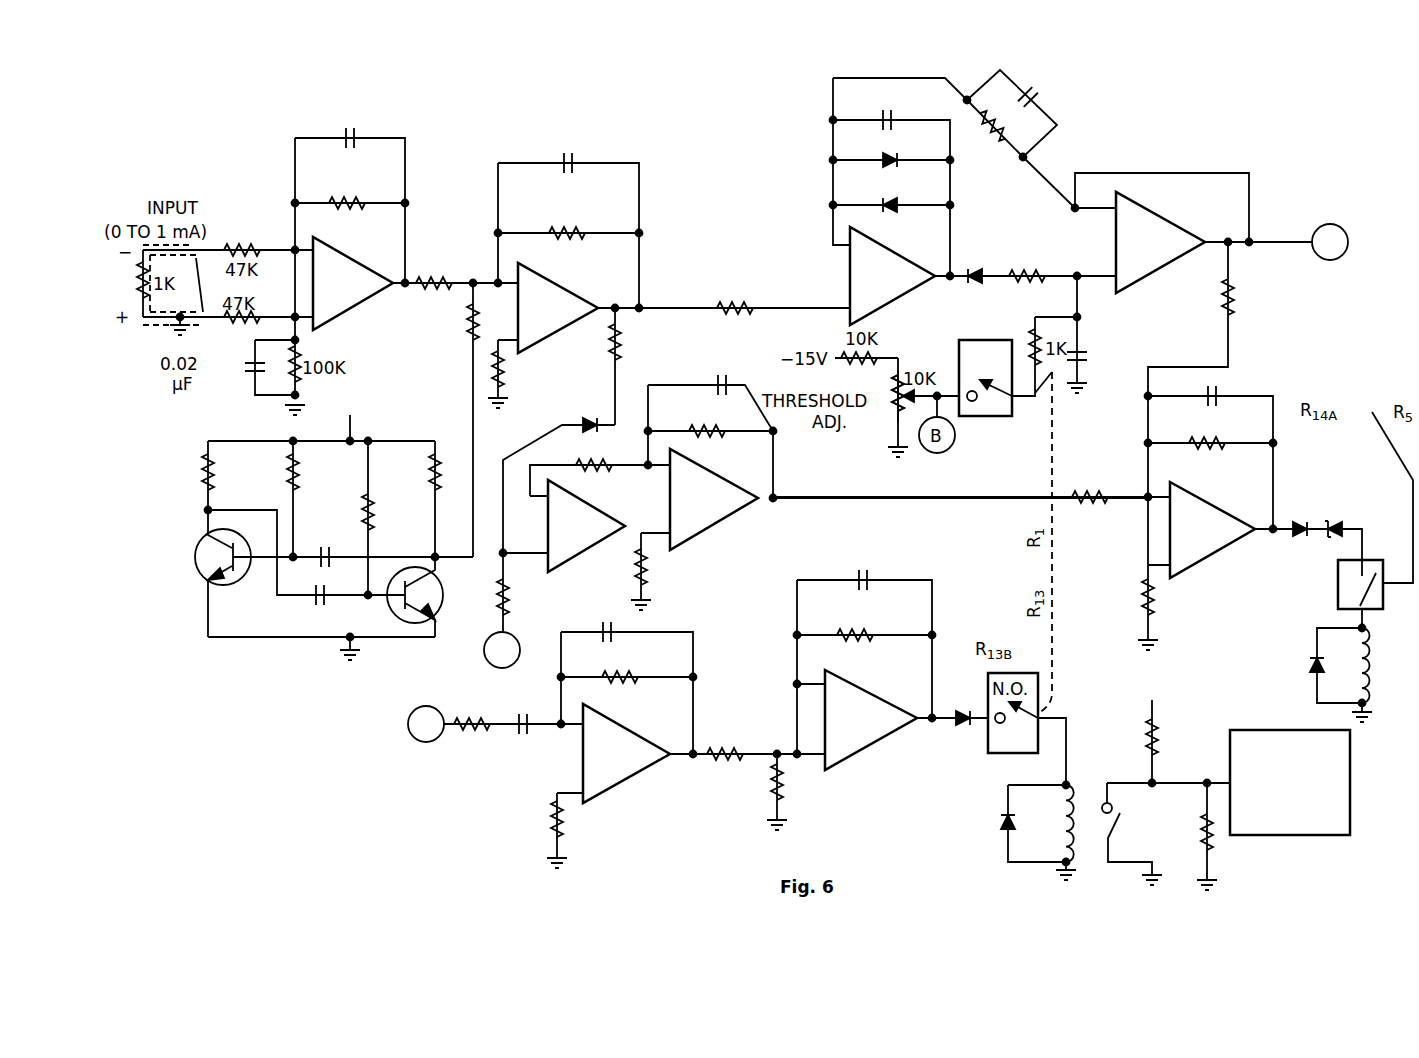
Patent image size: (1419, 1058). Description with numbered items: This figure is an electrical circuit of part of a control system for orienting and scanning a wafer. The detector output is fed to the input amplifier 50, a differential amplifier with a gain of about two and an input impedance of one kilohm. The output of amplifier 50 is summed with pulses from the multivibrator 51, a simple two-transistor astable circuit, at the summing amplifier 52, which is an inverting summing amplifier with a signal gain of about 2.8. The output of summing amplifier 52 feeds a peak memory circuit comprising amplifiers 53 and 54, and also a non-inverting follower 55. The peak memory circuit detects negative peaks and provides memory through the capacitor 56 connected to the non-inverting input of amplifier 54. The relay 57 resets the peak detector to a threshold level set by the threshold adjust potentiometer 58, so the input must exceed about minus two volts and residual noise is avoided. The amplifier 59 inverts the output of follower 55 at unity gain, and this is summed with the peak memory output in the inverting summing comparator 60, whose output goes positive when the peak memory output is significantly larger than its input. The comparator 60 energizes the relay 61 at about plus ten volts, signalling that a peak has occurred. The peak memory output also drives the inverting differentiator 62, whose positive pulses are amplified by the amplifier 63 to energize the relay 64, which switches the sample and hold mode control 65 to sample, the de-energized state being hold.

The input amplifier 50 is at (385, 300).
The multivibrator 51 is at (176, 611).
The summing amplifier 52 is at (558, 285).
The amplifier 53 is at (888, 306).
The amplifier 54 is at (1165, 220).
The non-inverting follower 55 is at (583, 552).
The capacitor 56 is at (1099, 382).
The relay 57 is at (972, 418).
The threshold adjust potentiometer 58 is at (895, 405).
The amplifier 59 is at (712, 525).
The inverting summing comparator 60 is at (1192, 570).
The relay 61 is at (1362, 655).
The inverting differentiator 62 is at (632, 778).
The amplifier 63 is at (857, 757).
The relay 64 is at (1075, 812).
The sample and hold mode control 65 is at (1352, 805).